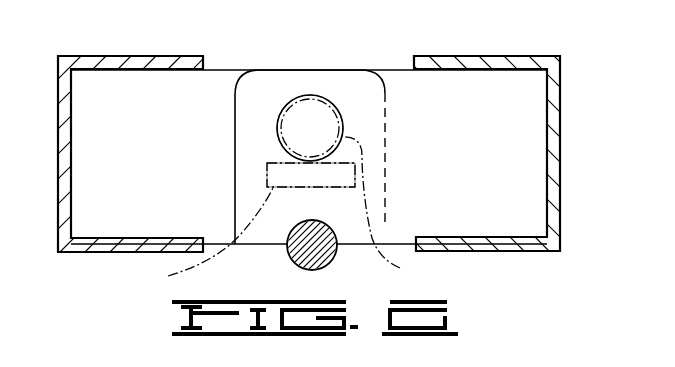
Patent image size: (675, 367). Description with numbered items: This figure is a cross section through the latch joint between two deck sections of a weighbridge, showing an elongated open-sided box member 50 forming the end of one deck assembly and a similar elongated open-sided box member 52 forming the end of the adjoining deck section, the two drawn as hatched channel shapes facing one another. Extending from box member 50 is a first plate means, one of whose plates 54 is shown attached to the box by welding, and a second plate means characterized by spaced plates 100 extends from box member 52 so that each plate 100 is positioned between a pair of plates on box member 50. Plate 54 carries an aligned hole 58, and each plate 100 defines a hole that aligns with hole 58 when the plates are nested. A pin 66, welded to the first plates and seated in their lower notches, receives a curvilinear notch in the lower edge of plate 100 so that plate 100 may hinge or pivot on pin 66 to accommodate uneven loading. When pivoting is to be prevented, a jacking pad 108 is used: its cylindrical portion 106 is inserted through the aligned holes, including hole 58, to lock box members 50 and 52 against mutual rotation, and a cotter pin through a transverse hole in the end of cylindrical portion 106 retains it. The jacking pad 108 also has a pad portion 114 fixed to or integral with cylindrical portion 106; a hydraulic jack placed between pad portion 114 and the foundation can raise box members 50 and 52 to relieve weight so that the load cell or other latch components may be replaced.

The box member 50 is at (97, 57).
The box member 52 is at (525, 60).
The plate 54 is at (385, 82).
The plate 100 is at (298, 100).
The hole 58 is at (310, 128).
The pin 66 is at (293, 262).
The pad portion 114 is at (180, 238).
The jacking pad 108 is at (311, 175).
The cylindrical portion 106 is at (414, 210).